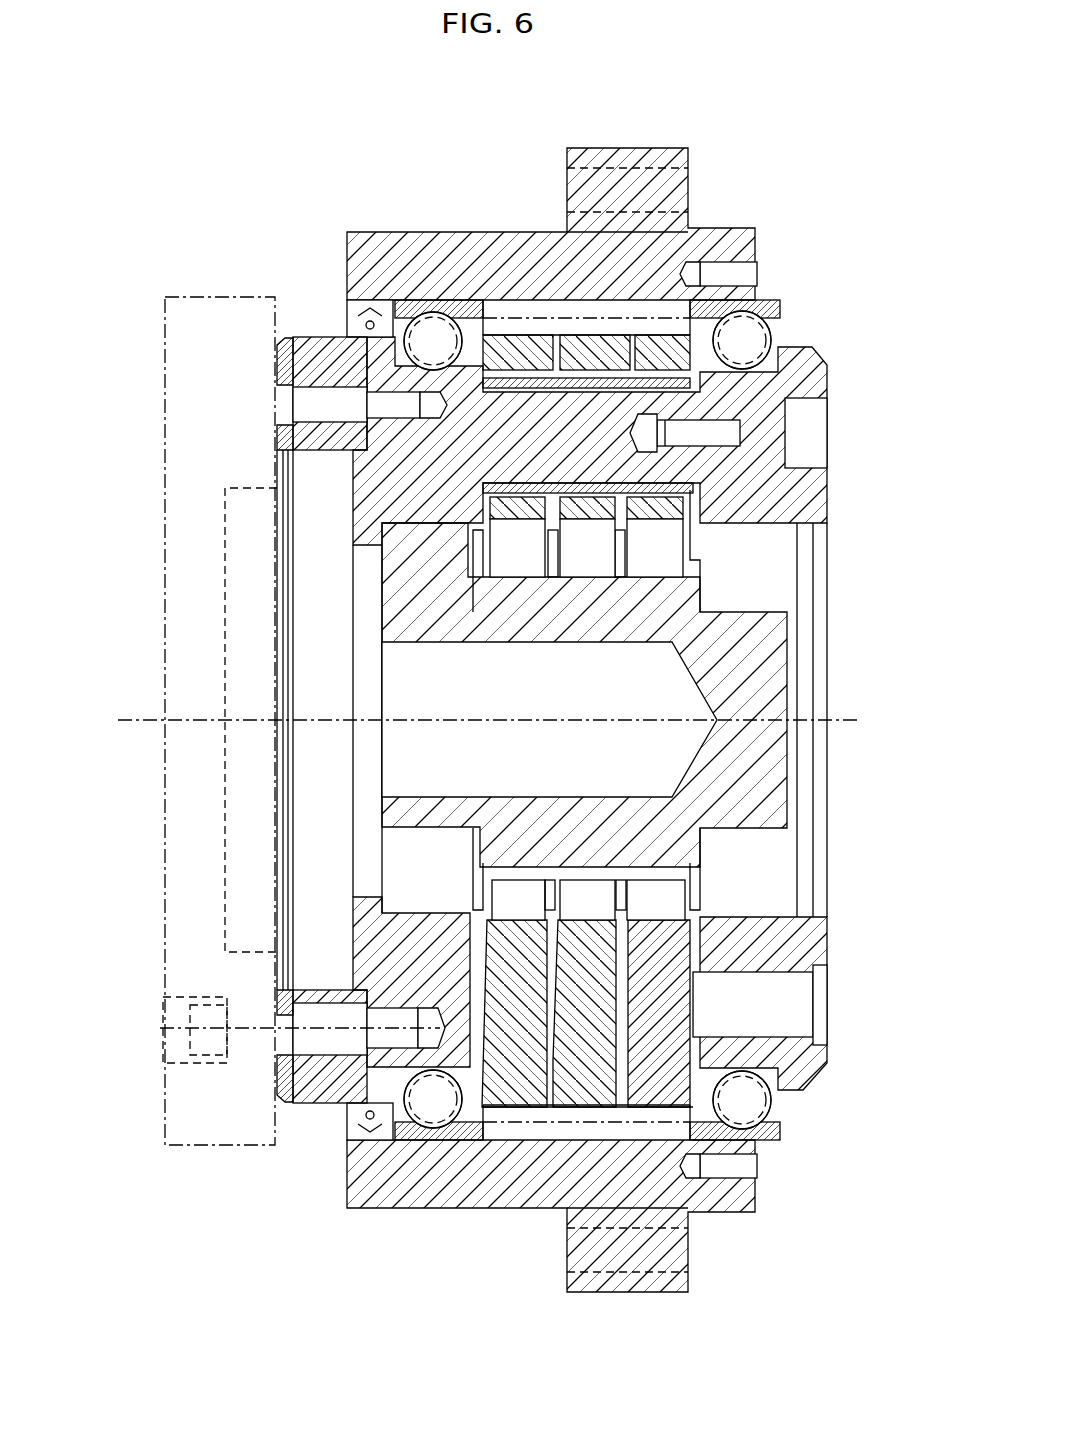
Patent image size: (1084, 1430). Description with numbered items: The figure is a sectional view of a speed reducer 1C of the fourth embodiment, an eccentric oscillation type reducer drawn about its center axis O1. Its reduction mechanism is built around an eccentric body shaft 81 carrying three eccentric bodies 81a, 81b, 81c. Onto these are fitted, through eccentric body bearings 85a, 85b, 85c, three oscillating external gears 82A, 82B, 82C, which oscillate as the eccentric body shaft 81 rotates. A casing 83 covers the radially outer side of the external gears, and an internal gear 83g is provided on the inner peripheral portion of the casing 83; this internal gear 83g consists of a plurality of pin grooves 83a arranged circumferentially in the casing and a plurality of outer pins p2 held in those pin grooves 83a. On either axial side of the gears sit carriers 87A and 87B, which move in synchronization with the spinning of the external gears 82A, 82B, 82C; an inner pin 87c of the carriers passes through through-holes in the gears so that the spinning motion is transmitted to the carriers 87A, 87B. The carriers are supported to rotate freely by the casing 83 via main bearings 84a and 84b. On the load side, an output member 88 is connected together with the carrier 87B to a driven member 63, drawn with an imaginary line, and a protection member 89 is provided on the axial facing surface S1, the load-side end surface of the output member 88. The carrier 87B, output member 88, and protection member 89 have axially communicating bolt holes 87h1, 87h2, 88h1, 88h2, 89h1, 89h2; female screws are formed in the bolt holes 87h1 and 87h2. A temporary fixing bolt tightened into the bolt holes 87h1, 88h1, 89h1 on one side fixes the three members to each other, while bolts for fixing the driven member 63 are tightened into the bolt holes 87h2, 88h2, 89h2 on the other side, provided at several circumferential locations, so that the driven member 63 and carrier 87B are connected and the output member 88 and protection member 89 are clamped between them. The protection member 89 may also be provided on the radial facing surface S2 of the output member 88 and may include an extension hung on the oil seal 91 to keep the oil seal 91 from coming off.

The speed reducer 1C is at (760, 184).
The casing 83 is at (637, 148).
The pin grooves 83a is at (548, 308).
The internal gear 83g is at (535, 158).
The outer pins p2 is at (510, 322).
The main bearing 84a is at (750, 345).
The main bearing 84b is at (442, 330).
The inner pin 87c is at (718, 400).
The carrier 87A is at (812, 1067).
The carrier 87B is at (353, 540).
The eccentric body shaft 81 is at (768, 670).
The eccentric body 81a is at (660, 577).
The eccentric body 81b is at (578, 577).
The eccentric body 81c is at (510, 577).
The oscillating external gear 82A is at (668, 943).
The oscillating external gear 82B is at (597, 943).
The oscillating external gear 82C is at (519, 928).
The eccentric body bearing 85a is at (660, 528).
The eccentric body bearing 85b is at (593, 552).
The eccentric body bearing 85c is at (523, 567).
The output member 88 is at (322, 340).
The protection member 89 is at (279, 340).
The oil seal 91 is at (347, 320).
The driven member 63 is at (165, 345).
The bolt hole 87h1 is at (400, 405).
The bolt hole 87h2 is at (370, 1032).
The bolt hole 88h1 is at (300, 422).
The bolt hole 88h2 is at (305, 1026).
The bolt hole 89h1 is at (290, 405).
The bolt hole 89h2 is at (290, 1030).
The axial facing surface S1 is at (282, 1083).
The radial facing surface S2 is at (337, 1107).
The axis O1 is at (506, 718).